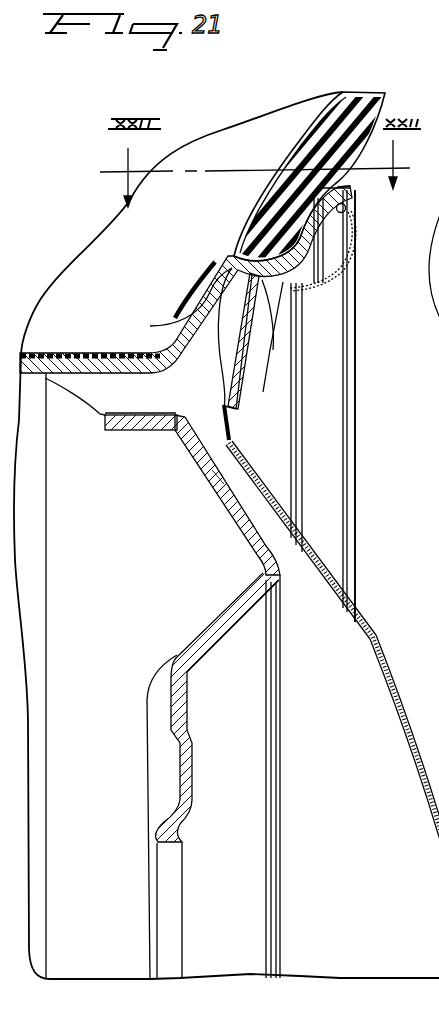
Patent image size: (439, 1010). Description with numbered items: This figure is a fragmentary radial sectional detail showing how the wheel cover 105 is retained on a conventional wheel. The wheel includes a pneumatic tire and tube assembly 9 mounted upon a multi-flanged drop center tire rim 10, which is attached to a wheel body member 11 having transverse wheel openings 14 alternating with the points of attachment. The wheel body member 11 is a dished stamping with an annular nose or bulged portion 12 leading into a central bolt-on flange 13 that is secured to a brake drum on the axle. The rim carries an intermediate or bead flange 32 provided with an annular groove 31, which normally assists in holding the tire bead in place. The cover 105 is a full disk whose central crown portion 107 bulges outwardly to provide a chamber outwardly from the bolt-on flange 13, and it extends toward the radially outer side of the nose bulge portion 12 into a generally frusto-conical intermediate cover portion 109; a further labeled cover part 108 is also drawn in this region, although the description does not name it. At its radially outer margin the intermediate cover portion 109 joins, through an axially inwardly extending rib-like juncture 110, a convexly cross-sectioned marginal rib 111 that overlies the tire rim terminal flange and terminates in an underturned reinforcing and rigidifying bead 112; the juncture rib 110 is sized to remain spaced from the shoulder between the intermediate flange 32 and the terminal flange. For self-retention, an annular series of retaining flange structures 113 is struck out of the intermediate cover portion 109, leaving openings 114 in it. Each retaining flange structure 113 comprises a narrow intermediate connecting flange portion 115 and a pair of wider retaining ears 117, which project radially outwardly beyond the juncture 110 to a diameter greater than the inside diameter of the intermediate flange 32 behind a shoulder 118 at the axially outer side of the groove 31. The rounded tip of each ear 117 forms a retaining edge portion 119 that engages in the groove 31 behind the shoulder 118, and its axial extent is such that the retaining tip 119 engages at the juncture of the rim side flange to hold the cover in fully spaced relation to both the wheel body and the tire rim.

The pneumatic tire and tube assembly 9 is at (366, 108).
The tire rim 10 is at (352, 186).
The wheel body member 11 is at (218, 478).
The nose or bulged portion 12 is at (268, 562).
The bolt-on flange 13 is at (182, 709).
The wheel openings 14 is at (100, 394).
The annular groove 31 is at (224, 312).
The intermediate or bead flange 32 is at (270, 345).
The cover 105 is at (380, 622).
The central crown portion 107 is at (408, 718).
The bend 108 is at (210, 450).
The intermediate cover portion 109 is at (230, 436).
The juncture rib 110 is at (297, 293).
The marginal rib 111 is at (338, 388).
The reinforcing and rigidifying bead 112 is at (347, 208).
The retaining flange structure 113 is at (212, 387).
The openings 114 is at (438, 420).
The intermediate connecting flange portion 115 is at (200, 437).
The retaining ear 117 is at (176, 308).
The shoulder 118 is at (246, 275).
The retaining edge portion 119 is at (212, 262).